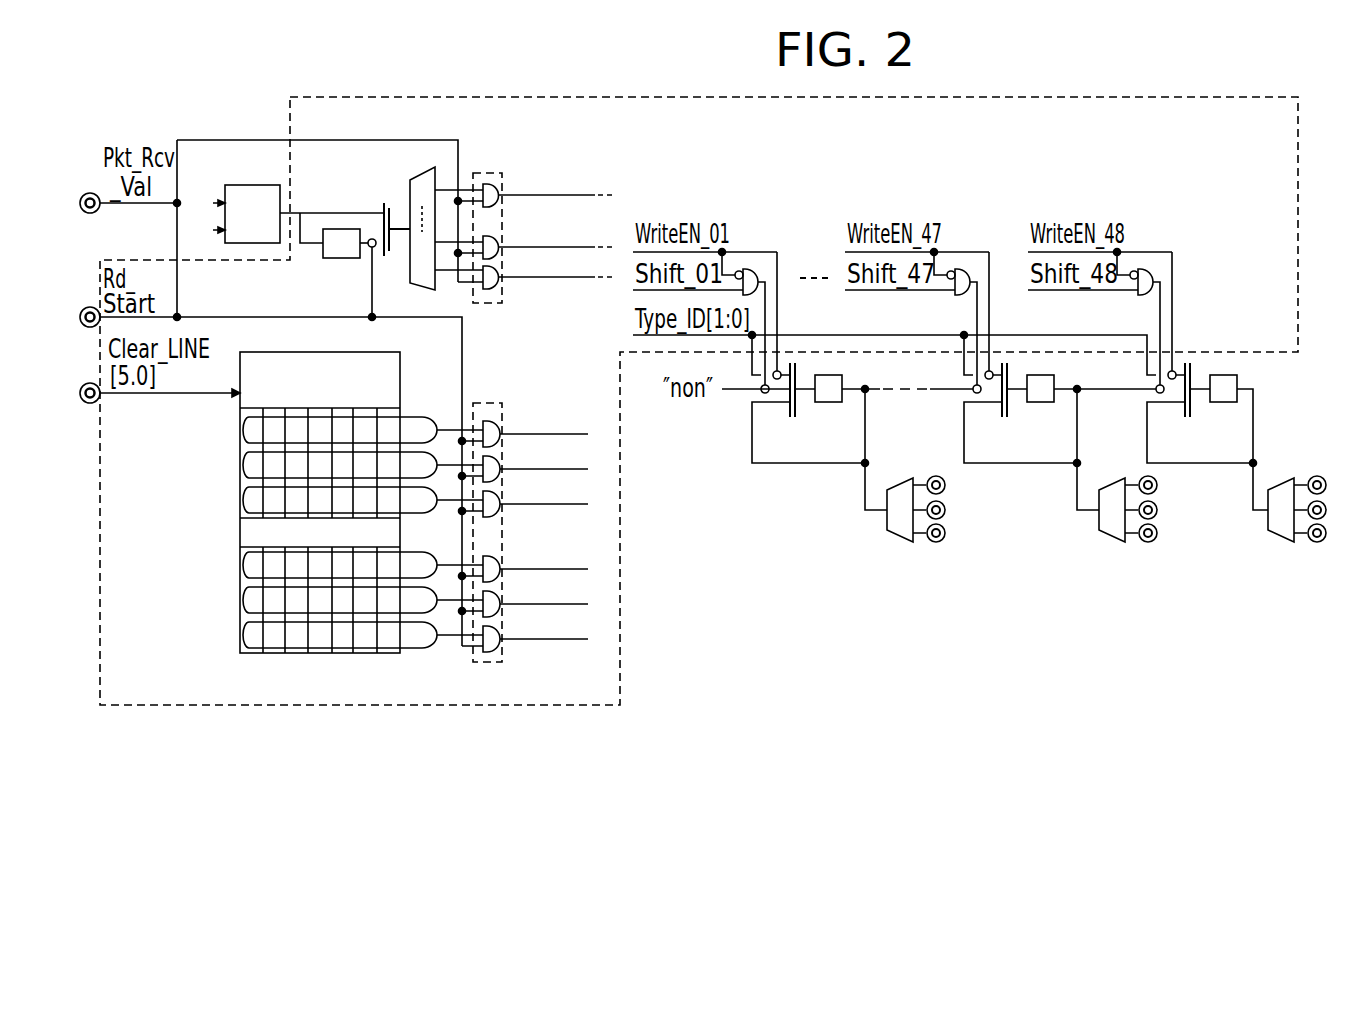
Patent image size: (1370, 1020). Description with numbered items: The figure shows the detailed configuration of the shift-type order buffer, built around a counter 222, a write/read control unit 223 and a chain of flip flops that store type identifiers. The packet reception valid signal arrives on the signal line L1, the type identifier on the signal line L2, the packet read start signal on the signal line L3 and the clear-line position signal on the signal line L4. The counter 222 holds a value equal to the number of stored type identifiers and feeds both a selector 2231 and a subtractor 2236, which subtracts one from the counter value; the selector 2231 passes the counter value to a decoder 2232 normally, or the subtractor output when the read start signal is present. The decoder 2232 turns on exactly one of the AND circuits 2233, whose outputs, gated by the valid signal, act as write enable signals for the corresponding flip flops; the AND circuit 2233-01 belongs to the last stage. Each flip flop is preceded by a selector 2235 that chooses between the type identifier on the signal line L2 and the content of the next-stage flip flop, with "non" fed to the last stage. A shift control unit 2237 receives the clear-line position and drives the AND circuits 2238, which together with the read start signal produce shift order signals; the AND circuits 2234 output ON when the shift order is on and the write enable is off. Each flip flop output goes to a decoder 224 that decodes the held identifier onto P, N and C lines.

The counter 222 is at (234, 185).
The write/read control unit 223 is at (620, 506).
The decoder 224 is at (896, 536).
The selector 2231 is at (383, 201).
The decoder 2232 is at (441, 178).
The AND circuits 2233 is at (536, 213).
The AND circuit 2233-01 is at (498, 289).
The AND circuits 2234 is at (749, 268).
The selector 2235 is at (794, 364).
The subtractor 2236 is at (336, 258).
The shift control unit 2237 is at (372, 352).
The AND circuits 2238 is at (530, 509).
The signal line L1 is at (107, 208).
The signal line L2 is at (793, 335).
The signal line L3 is at (215, 320).
The signal line L4 is at (150, 398).